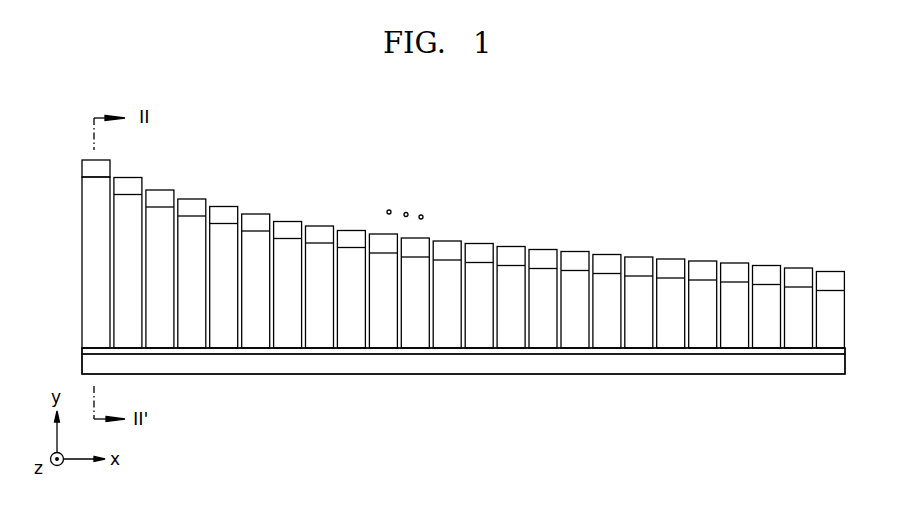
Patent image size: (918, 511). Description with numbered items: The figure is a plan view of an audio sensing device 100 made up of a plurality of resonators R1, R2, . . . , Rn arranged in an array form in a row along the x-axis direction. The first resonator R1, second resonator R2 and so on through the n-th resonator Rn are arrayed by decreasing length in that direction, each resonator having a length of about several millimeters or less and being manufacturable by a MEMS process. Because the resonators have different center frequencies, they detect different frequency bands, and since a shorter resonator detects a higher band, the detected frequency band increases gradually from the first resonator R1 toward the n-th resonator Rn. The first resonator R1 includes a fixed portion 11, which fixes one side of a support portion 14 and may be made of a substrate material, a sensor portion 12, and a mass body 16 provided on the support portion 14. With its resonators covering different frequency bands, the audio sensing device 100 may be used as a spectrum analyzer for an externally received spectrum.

The audio sensing device 100 is at (582, 151).
The fixed portion 11 is at (83, 364).
The sensor portion 12 is at (83, 349).
The support portion 14 is at (82, 262).
The mass body 16 is at (88, 170).
The first resonator R1 is at (105, 188).
The second resonator R2 is at (134, 207).
The n-th resonator Rn is at (832, 307).